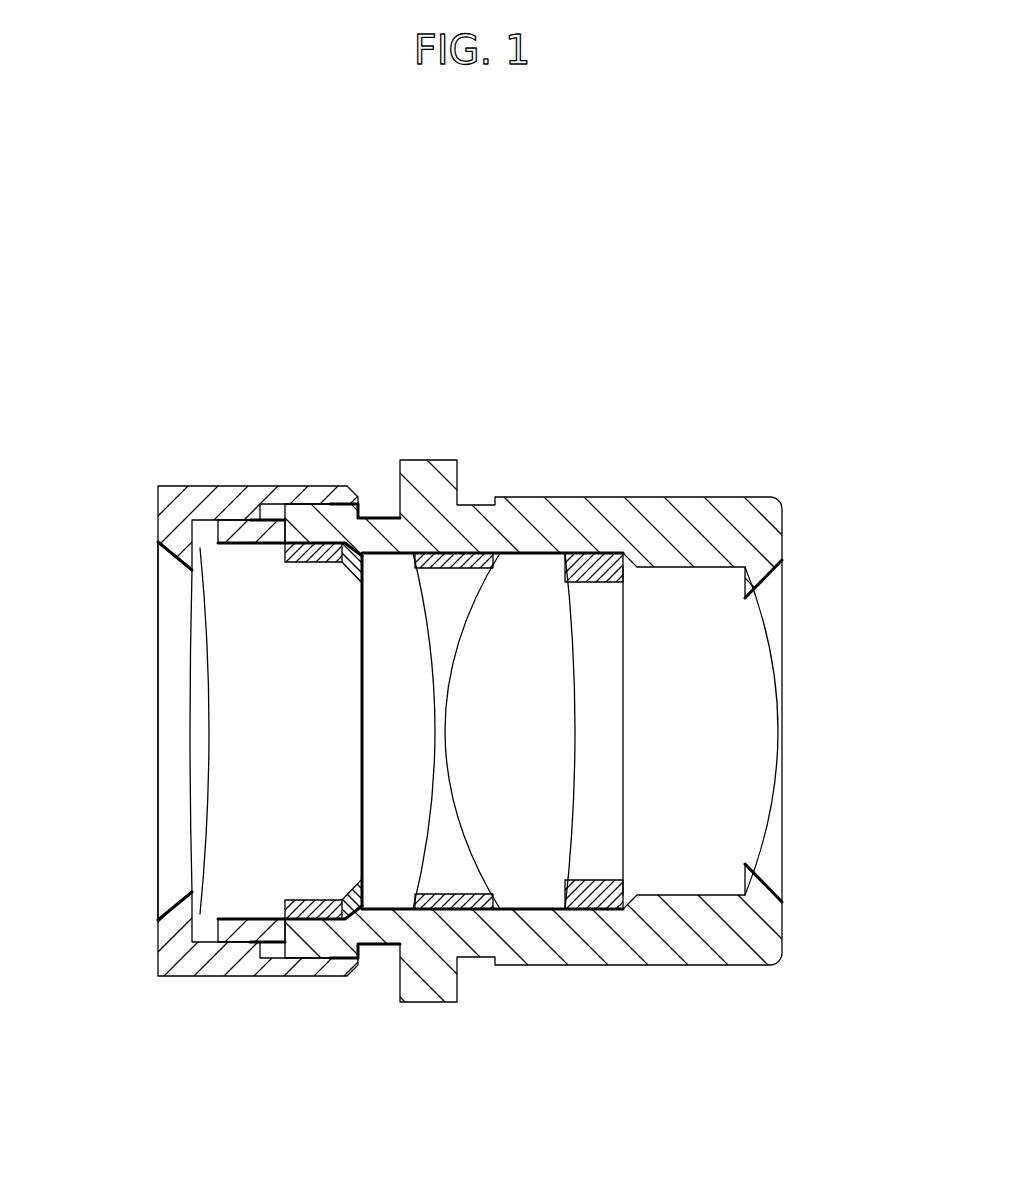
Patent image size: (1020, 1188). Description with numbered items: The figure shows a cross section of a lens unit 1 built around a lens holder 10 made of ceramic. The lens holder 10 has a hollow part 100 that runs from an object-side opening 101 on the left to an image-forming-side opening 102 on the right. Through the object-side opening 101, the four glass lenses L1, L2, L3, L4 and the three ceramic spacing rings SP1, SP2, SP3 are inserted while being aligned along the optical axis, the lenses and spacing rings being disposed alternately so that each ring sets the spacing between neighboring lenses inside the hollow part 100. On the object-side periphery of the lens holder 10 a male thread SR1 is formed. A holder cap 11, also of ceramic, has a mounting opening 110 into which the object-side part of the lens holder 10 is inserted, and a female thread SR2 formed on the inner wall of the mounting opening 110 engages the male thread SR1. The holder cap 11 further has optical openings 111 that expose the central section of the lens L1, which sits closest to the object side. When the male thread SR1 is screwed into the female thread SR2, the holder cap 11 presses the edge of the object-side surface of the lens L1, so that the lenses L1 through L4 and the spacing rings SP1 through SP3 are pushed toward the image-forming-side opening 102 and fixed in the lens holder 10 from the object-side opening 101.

The lens unit 1 is at (570, 272).
The lens holder 10 is at (670, 510).
The hollow part 100 is at (526, 573).
The object-side opening 101 is at (218, 526).
The image-forming-side opening 102 is at (785, 578).
The mounting opening 110 is at (358, 507).
The holder cap 11 is at (197, 495).
The optical opening 111 is at (158, 558).
The male thread SR1 is at (298, 485).
The female thread SR2 is at (327, 514).
The spacing ring SP1 is at (345, 885).
The spacing ring SP2 is at (447, 568).
The spacing ring SP3 is at (587, 885).
The lens L1 is at (235, 880).
The lens L2 is at (373, 885).
The lens L3 is at (525, 880).
The lens L4 is at (687, 873).